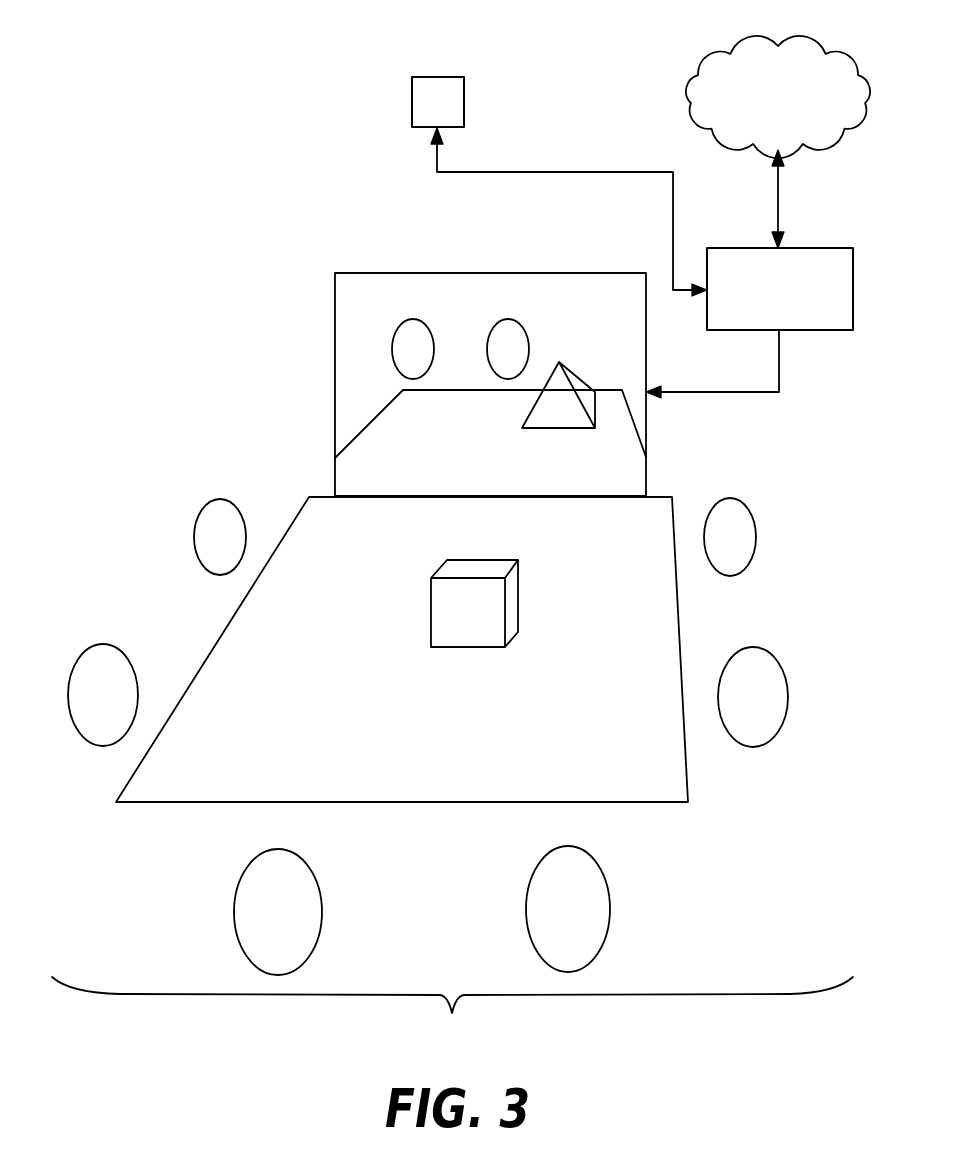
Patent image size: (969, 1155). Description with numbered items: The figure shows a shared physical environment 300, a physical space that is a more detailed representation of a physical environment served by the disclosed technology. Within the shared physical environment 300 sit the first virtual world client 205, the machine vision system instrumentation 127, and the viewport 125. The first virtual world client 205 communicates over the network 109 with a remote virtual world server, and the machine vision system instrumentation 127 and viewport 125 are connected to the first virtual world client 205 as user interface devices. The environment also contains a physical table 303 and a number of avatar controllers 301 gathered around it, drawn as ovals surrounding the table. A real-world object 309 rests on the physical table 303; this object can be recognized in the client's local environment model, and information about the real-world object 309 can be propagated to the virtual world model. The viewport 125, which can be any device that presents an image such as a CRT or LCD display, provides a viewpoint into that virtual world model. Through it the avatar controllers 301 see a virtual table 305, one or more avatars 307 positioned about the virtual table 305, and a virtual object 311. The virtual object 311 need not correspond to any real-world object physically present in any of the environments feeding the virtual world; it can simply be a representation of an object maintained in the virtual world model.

The network 109 is at (766, 43).
The machine vision system instrumentation 127 is at (442, 77).
The first virtual world client 205 is at (798, 248).
The viewport 125 is at (462, 273).
The avatar 307 is at (413, 319).
The virtual table 305 is at (383, 408).
The virtual object 311 is at (581, 378).
The physical table 303 is at (222, 635).
The real-world object 309 is at (490, 560).
The avatar controller 301 is at (220, 500).
The shared physical environment 300 is at (472, 1043).